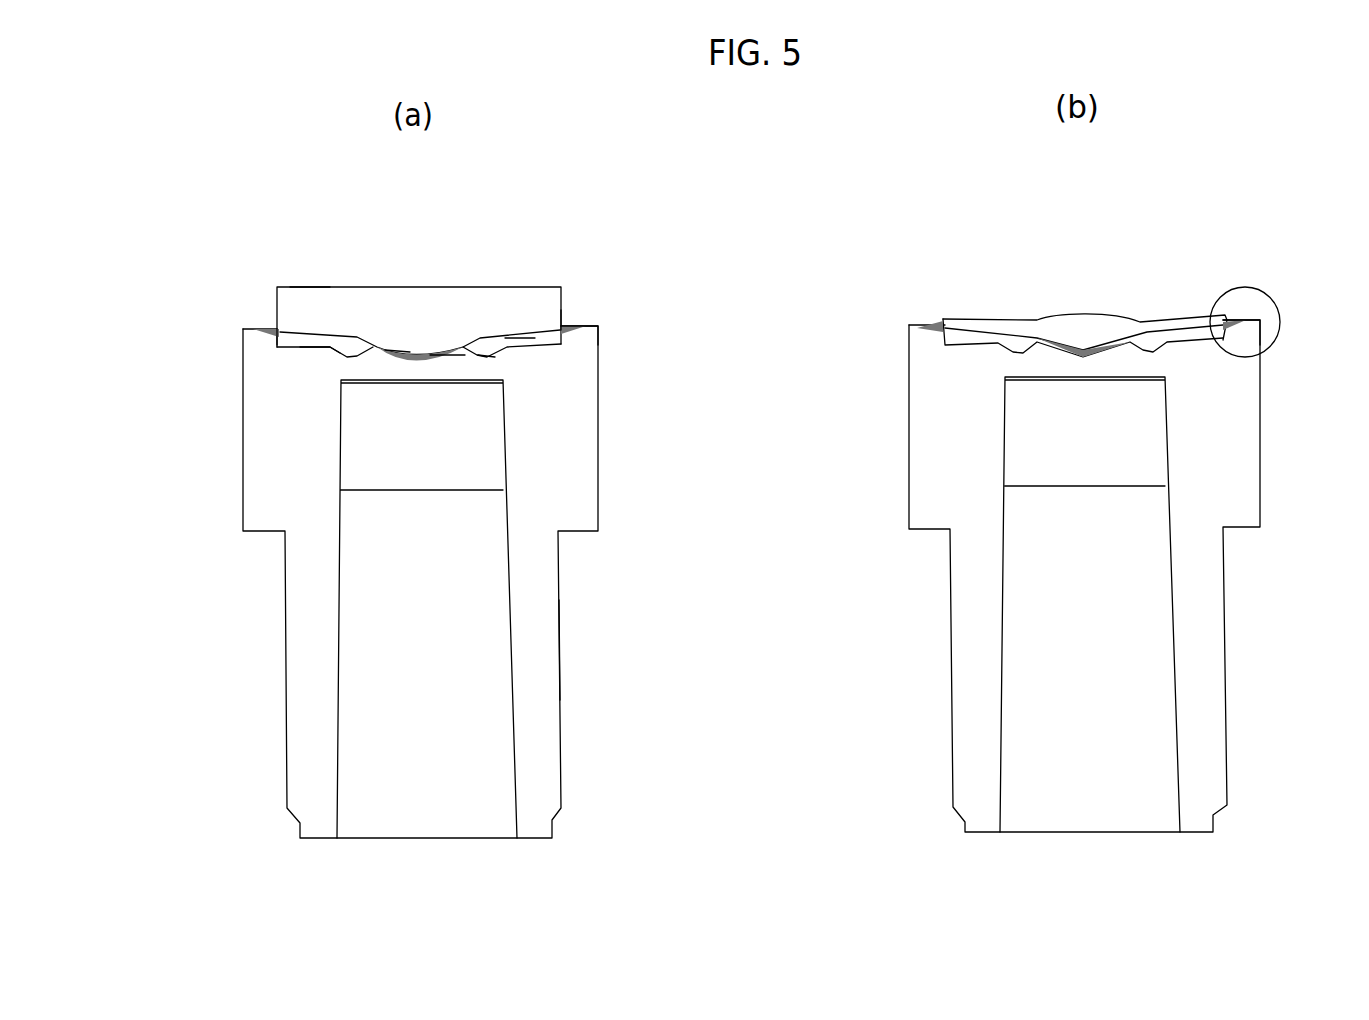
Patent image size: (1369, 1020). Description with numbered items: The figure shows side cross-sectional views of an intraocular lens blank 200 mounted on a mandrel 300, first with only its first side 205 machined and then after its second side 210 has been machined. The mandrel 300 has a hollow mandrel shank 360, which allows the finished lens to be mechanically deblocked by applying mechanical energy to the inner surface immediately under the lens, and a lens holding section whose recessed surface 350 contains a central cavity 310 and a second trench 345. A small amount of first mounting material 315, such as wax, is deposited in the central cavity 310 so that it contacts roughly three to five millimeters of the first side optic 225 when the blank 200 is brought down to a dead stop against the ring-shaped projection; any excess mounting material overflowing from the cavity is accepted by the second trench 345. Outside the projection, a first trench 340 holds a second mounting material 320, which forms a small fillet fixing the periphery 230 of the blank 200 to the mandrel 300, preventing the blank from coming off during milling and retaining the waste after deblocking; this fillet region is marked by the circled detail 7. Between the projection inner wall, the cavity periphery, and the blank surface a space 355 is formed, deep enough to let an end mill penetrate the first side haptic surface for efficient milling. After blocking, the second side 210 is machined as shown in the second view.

The detail region 7 is at (1255, 285).
The intraocular lens blank 200 is at (461, 293).
The first side 205 is at (292, 338).
The second side 210 is at (303, 288).
The first side optic 225 is at (447, 345).
The periphery 230 is at (562, 310).
The mandrel 300 is at (246, 670).
The central cavity 310 is at (398, 350).
The first mounting material 315 is at (423, 355).
The second mounting material 320 is at (598, 325).
The first trench 340 is at (257, 328).
The second trench 345 is at (488, 352).
The recessed surface 350 is at (321, 347).
The space 355 is at (520, 338).
The hollow mandrel shank 360 is at (540, 652).